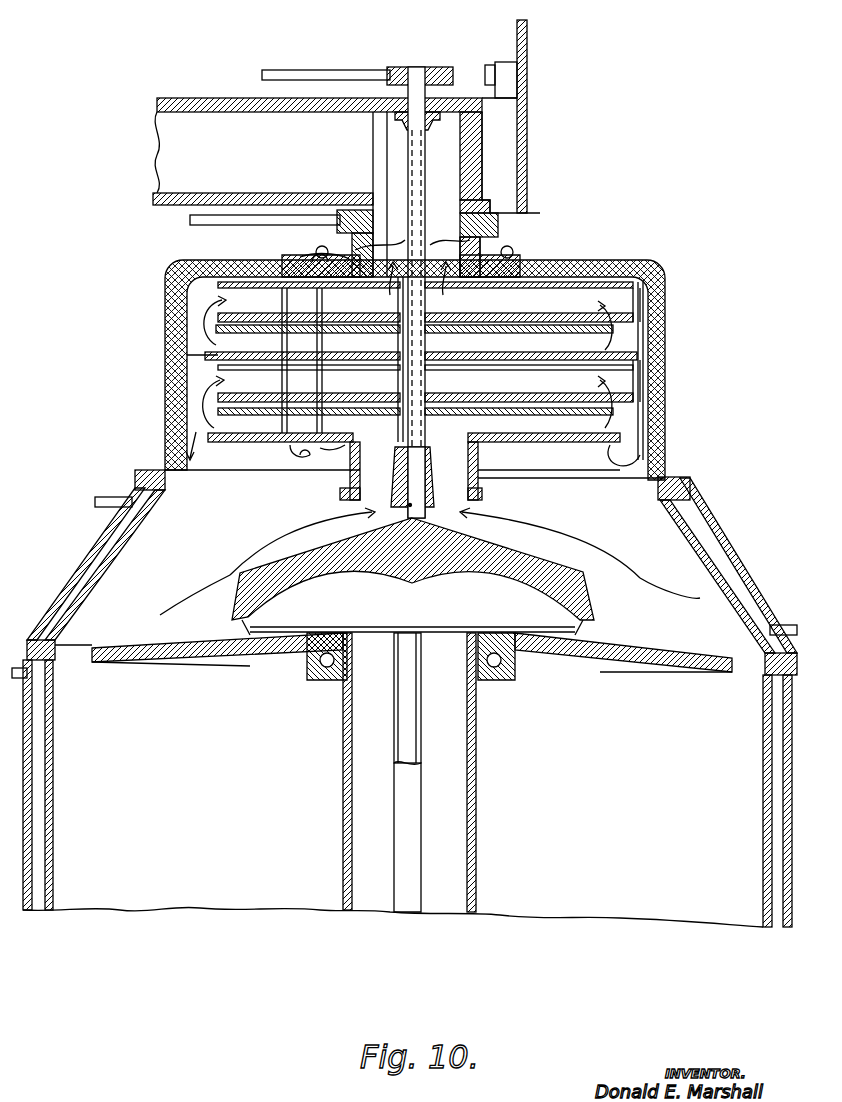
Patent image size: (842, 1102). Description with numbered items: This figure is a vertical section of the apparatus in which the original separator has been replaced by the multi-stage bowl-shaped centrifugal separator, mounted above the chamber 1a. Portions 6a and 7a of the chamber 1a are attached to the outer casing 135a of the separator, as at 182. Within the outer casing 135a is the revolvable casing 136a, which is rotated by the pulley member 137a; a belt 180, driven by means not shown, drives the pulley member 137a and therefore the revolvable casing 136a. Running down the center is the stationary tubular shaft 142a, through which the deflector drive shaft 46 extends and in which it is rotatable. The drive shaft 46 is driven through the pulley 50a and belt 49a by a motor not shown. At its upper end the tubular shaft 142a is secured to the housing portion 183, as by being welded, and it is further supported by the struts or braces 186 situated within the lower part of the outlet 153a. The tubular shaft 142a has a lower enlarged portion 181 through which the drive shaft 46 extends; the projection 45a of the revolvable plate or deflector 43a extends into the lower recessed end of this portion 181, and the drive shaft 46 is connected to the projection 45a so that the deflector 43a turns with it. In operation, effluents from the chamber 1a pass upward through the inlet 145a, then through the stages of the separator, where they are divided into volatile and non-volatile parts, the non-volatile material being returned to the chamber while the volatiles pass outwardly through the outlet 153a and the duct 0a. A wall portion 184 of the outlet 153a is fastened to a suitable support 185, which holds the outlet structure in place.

The duct 0a is at (158, 190).
The belt 49a is at (326, 70).
The pulley 50a is at (410, 67).
The housing portion 183 is at (455, 100).
The support 185 is at (500, 92).
The wall portion 184 is at (490, 118).
The outlet 153a is at (445, 152).
The stationary tubular shaft 142a is at (430, 180).
The pulley member 137a is at (500, 227).
The belt 180 is at (215, 222).
The struts or braces 186 is at (355, 258).
The revolvable casing 136a is at (666, 292).
The outer casing 135a is at (165, 446).
The inlet 145a is at (345, 490).
The lower enlarged portion 181 is at (478, 465).
The shaft 46 is at (440, 488).
The projection 45a is at (430, 520).
The revolvable plate or deflector 43a is at (520, 556).
The attachment 182 is at (135, 480).
The portion of chamber 7a is at (90, 550).
The portion of chamber 6a is at (80, 592).
The chamber 1a is at (765, 737).